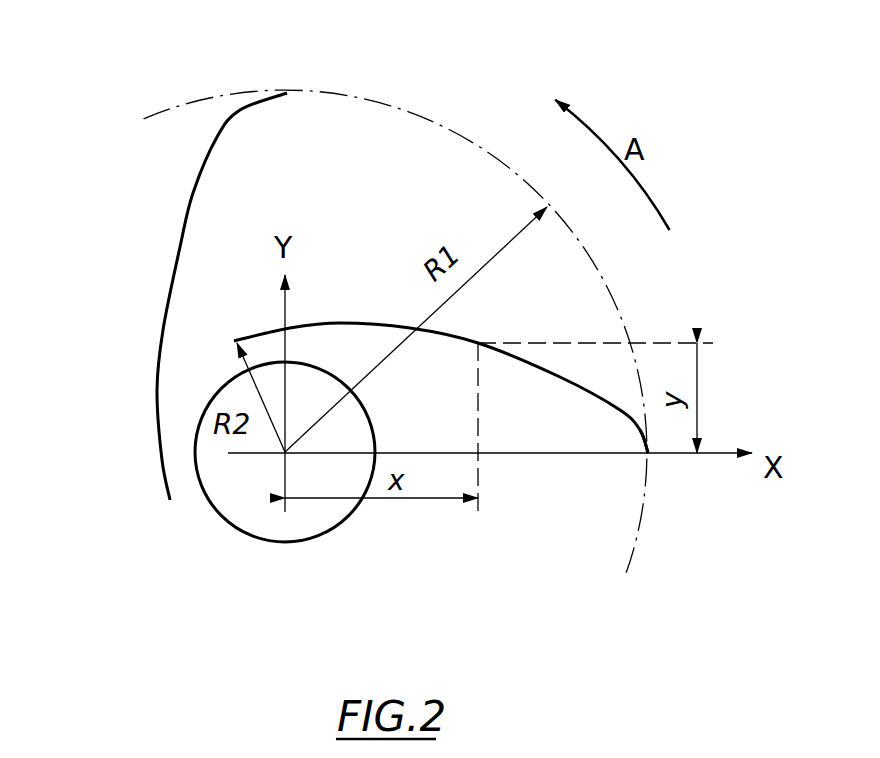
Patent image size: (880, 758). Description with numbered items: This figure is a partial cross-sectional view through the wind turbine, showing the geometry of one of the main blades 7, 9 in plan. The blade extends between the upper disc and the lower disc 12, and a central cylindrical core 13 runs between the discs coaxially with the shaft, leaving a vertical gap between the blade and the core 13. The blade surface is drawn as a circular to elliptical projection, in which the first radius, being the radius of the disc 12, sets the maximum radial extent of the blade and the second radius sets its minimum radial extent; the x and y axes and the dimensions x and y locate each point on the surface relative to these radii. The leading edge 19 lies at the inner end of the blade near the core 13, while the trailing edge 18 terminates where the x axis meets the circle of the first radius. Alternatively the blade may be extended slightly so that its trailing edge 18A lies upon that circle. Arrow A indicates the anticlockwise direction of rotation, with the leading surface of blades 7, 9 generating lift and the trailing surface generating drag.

The main blade 7 is at (178, 253).
The main blade 9 is at (348, 322).
The lower disc 12 is at (408, 115).
The central cylindrical core 13 is at (245, 537).
The trailing edge 18 is at (651, 459).
The extended trailing edge 18A is at (634, 474).
The leading edge 19 is at (233, 336).